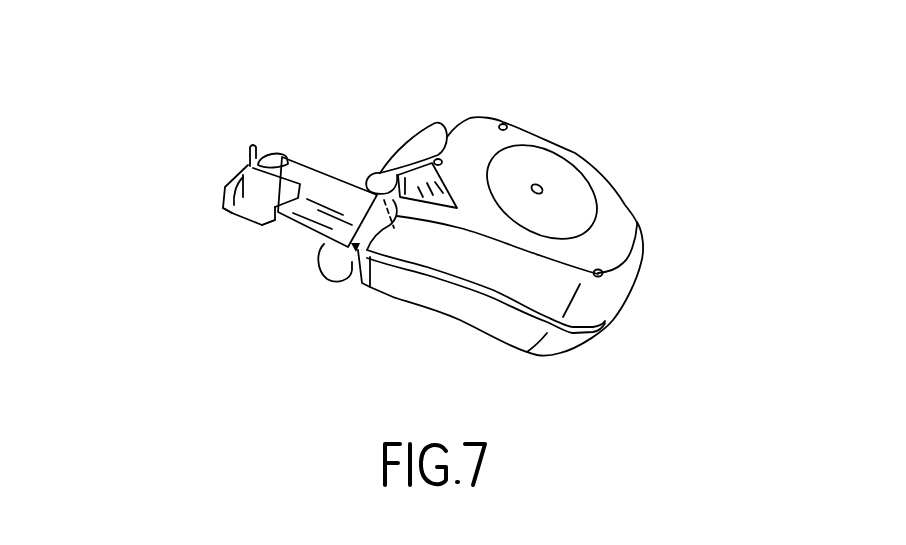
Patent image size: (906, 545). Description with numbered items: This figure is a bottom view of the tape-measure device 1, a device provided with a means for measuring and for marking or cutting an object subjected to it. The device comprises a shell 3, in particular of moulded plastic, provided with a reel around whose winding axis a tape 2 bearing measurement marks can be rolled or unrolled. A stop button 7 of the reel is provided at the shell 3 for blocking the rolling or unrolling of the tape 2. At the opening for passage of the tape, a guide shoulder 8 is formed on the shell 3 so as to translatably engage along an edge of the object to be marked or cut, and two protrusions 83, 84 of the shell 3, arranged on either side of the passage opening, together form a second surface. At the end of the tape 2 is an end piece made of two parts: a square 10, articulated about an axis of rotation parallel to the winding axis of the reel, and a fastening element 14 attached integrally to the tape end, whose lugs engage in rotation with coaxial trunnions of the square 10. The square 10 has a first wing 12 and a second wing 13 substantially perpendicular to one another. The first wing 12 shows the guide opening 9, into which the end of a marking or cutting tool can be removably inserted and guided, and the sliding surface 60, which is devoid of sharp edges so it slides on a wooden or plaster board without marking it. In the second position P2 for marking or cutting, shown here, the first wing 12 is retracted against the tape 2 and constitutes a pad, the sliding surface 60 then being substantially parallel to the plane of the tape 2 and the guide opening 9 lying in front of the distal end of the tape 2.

The tape-measure device 1 is at (549, 101).
The tape 2 is at (330, 187).
The shell 3 is at (565, 186).
The stop button 7 is at (424, 132).
The guide shoulder 8 is at (358, 266).
The guide opening 9 is at (233, 203).
The square 10 is at (250, 158).
The first wing 12 is at (280, 207).
The second wing 13 is at (235, 180).
The fastening element 14 is at (278, 156).
The sliding surface 60 is at (250, 213).
The protrusion 83 is at (383, 173).
The protrusion 84 is at (324, 254).
The second position P2 is at (190, 121).